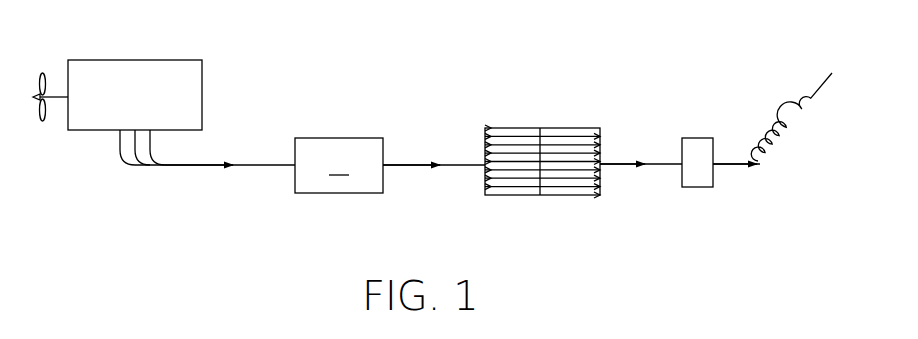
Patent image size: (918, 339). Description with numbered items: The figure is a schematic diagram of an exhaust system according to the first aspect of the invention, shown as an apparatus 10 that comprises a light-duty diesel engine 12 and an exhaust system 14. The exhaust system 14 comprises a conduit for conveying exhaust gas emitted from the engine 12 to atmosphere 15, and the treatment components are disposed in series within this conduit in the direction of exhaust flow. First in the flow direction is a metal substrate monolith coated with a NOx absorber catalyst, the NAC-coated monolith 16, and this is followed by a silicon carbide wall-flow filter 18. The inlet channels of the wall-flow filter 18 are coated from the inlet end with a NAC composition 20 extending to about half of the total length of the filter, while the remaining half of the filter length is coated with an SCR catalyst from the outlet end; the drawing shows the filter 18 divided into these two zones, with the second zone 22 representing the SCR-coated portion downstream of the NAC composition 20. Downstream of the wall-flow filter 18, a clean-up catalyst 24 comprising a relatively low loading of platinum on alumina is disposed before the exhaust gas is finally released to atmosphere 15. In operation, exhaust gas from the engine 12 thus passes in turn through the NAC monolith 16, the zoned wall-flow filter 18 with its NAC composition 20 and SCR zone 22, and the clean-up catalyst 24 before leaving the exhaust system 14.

The apparatus 10 is at (439, 93).
The light-duty diesel engine 12 is at (136, 60).
The exhaust system 14 is at (282, 206).
The atmosphere 15 is at (794, 116).
The metal substrate monolith coated with a NAC 16 is at (390, 165).
The silicon carbide wall-flow filter 18 is at (542, 170).
The NAC composition 20 is at (512, 128).
The second section of collector 22 is at (570, 128).
The power conditioner 24 is at (697, 188).